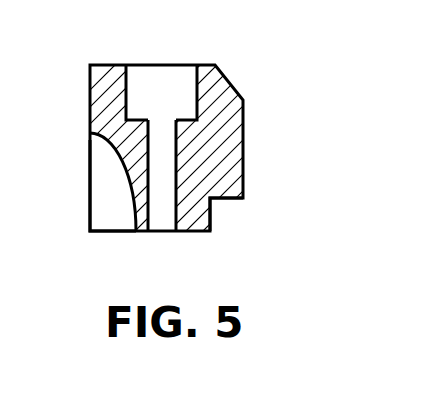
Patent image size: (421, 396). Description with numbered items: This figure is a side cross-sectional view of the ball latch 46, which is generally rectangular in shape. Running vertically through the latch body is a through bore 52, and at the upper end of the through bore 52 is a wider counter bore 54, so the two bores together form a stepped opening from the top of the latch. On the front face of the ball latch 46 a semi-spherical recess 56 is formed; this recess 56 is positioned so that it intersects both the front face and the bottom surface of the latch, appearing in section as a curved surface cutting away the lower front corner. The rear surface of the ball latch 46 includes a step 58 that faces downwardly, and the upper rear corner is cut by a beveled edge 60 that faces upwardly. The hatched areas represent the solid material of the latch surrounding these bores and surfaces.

The ball latch 46 is at (90, 147).
The through bore 52 is at (162, 210).
The counter bore 54 is at (152, 83).
The semi-spherical recess 56 is at (107, 207).
The step 58 is at (222, 200).
The beveled edge 60 is at (232, 86).